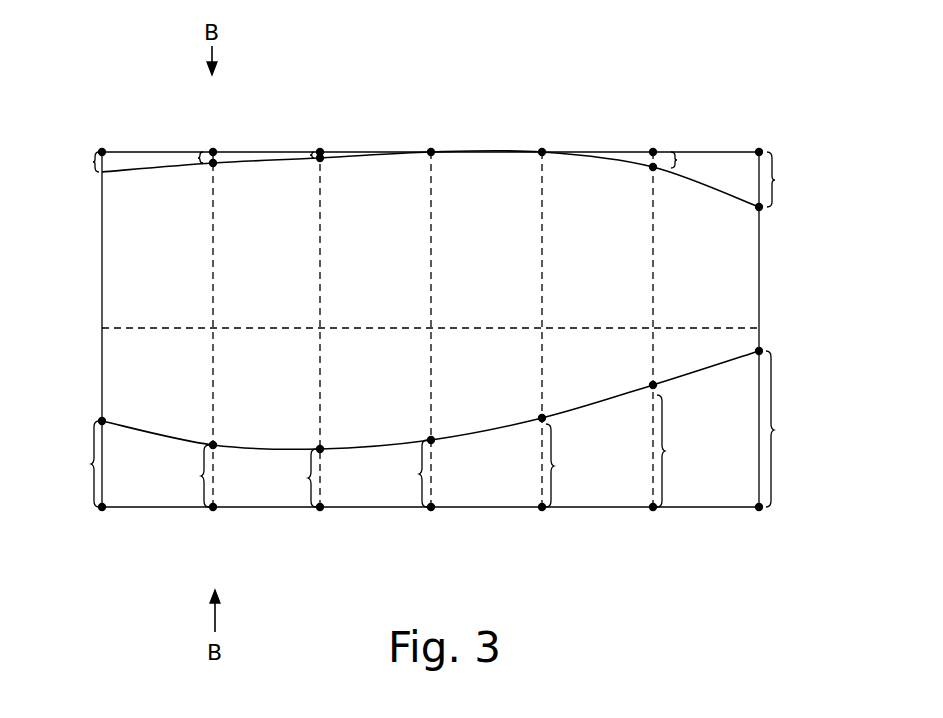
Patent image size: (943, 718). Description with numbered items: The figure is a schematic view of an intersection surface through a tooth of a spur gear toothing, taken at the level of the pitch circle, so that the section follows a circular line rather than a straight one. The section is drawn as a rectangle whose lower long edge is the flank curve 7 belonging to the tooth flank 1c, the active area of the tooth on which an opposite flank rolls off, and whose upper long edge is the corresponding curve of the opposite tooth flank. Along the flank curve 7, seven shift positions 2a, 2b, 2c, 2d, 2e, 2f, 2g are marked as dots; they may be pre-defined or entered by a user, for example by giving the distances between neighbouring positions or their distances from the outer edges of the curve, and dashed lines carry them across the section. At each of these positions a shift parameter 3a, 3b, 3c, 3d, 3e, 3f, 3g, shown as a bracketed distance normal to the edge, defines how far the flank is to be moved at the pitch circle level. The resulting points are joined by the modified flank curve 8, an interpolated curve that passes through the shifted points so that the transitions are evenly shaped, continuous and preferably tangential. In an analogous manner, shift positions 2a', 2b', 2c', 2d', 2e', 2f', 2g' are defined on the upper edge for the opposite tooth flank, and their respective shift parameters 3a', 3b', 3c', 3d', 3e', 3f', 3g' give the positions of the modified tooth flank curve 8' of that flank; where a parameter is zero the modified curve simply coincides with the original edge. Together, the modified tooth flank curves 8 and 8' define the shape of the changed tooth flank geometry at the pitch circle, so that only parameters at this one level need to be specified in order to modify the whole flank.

The tooth flank 1c is at (156, 291).
The flank curve 7 is at (152, 152).
The modified flank curve 8 is at (445, 366).
The modified tooth flank curve 8' is at (464, 216).
The shift position 2a is at (89, 499).
The shift position 2b is at (197, 511).
The shift position 2c is at (306, 513).
The shift position 2d is at (418, 508).
The shift position 2e is at (529, 497).
The shift position 2f is at (637, 481).
The shift position 2g is at (746, 464).
The shift position 2a' is at (119, 123).
The shift position 2b' is at (229, 128).
The shift position 2c' is at (337, 126).
The shift position 2d' is at (450, 122).
The shift position 2e' is at (559, 122).
The shift position 2f' is at (666, 129).
The shift position 2g' is at (776, 149).
The shift parameter 3a is at (62, 464).
The shift parameter 3b is at (165, 491).
The shift parameter 3c is at (273, 493).
The shift parameter 3d is at (383, 488).
The shift parameter 3e is at (582, 480).
The shift parameter 3f is at (690, 466).
The shift parameter 3g is at (807, 444).
The shift parameter 3a' is at (65, 177).
The shift parameter 3b' is at (167, 177).
The shift parameter 3c' is at (282, 177).
The shift parameter 3d' is at (399, 179).
The shift parameter 3e' is at (511, 179).
The shift parameter 3f' is at (705, 141).
The shift parameter 3g' is at (803, 169).